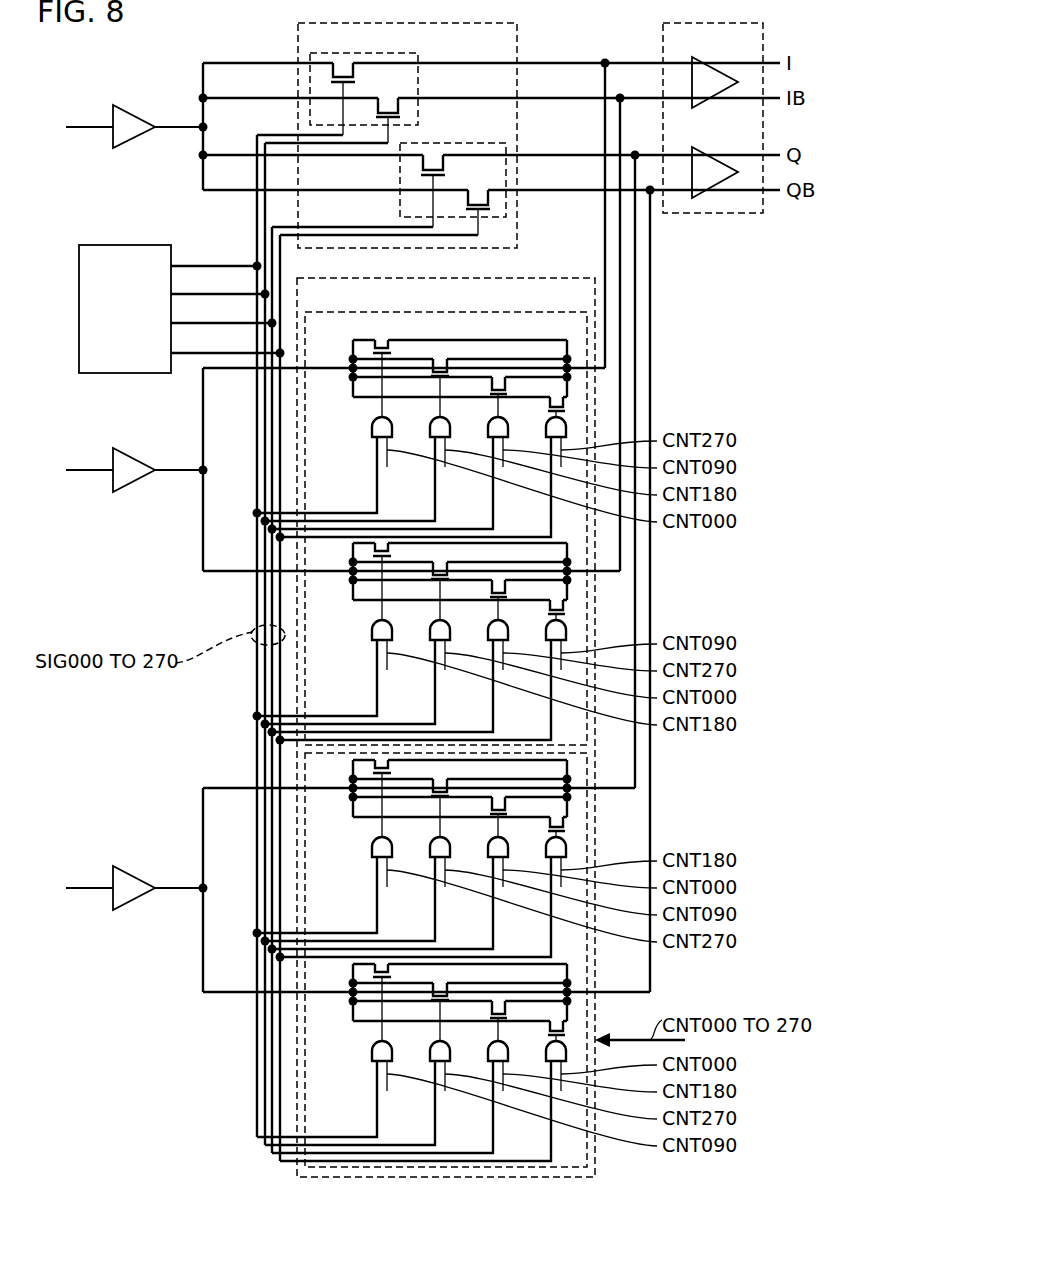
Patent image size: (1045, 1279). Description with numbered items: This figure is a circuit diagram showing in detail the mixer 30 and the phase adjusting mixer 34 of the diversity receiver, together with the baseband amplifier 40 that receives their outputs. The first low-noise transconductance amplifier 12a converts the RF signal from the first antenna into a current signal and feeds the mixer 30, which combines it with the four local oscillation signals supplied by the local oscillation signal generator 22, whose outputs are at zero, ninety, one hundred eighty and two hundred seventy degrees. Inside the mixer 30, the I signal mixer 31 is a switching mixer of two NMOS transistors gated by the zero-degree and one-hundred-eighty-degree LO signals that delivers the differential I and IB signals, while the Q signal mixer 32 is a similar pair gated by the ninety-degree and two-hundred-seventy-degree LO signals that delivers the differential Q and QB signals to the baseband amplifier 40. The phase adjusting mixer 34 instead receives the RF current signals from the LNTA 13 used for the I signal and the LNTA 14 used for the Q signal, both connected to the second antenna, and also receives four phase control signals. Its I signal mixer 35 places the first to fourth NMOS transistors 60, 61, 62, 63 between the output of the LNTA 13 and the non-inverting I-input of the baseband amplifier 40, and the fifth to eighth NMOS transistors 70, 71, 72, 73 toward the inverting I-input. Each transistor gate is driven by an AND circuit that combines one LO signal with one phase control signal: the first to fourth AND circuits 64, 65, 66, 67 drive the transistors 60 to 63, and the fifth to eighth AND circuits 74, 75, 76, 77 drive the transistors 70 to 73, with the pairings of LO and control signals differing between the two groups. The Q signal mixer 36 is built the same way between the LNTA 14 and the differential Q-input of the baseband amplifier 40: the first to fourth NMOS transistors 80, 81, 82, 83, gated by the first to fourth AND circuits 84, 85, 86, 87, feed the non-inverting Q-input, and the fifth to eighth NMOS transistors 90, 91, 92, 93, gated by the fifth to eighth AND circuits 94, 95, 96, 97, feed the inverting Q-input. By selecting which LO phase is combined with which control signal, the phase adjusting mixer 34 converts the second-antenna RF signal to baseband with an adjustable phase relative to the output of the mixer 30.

The first low-noise transconductance amplifier 12a is at (140, 104).
The LNTA for the I signal 13 is at (137, 493).
The LNTA for the Q signal 14 is at (137, 911).
The local oscillation signal generator 22 is at (121, 375).
The mixer 30 is at (517, 52).
The I signal mixer 31 is at (418, 80).
The Q signal mixer 32 is at (400, 172).
The phase adjusting mixer 34 is at (540, 278).
The I signal mixer 35 is at (595, 735).
The Q signal mixer 36 is at (595, 1165).
The baseband amplifier 40 is at (765, 50).
The first NMOS transistor 60 is at (382, 340).
The second NMOS transistor 61 is at (440, 359).
The third NMOS transistor 62 is at (498, 377).
The fourth NMOS transistor 63 is at (558, 397).
The first AND circuit 64 is at (374, 429).
The second AND circuit 65 is at (432, 429).
The third AND circuit 66 is at (490, 429).
The fourth AND circuit 67 is at (548, 429).
The fifth NMOS transistor 70 is at (375, 548).
The sixth NMOS transistor 71 is at (433, 568).
The seventh NMOS transistor 72 is at (507, 586).
The eighth NMOS transistor 73 is at (563, 607).
The fifth AND circuit 74 is at (374, 632).
The sixth AND circuit 75 is at (432, 632).
The seventh AND circuit 76 is at (490, 632).
The eighth AND circuit 77 is at (548, 632).
The first NMOS transistor 80 is at (375, 768).
The second NMOS transistor 81 is at (433, 785).
The third NMOS transistor 82 is at (507, 803).
The fourth NMOS transistor 83 is at (563, 824).
The first AND circuit 84 is at (374, 849).
The second AND circuit 85 is at (432, 849).
The third AND circuit 86 is at (490, 849).
The fourth AND circuit 87 is at (548, 849).
The fifth NMOS transistor 90 is at (375, 970).
The sixth NMOS transistor 91 is at (433, 989).
The seventh NMOS transistor 92 is at (507, 1006).
The eighth NMOS transistor 93 is at (565, 1026).
The fifth AND circuit 94 is at (374, 1053).
The sixth AND circuit 95 is at (432, 1053).
The seventh AND circuit 96 is at (490, 1053).
The eighth AND circuit 97 is at (548, 1053).